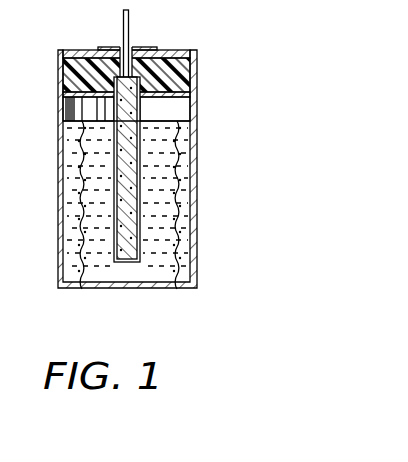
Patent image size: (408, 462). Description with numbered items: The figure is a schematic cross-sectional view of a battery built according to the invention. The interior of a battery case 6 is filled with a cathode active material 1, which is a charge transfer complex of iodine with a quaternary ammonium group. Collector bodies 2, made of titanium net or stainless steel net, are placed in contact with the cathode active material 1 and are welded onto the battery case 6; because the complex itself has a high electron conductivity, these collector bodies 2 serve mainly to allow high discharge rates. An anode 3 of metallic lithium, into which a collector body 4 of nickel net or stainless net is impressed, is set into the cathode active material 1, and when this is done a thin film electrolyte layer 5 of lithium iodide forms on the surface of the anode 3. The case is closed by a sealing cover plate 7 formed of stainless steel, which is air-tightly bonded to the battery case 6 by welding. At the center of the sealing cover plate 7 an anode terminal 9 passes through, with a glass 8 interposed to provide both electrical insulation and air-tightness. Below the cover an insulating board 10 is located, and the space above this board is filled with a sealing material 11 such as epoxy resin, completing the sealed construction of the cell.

The cathode active material 1 is at (162, 165).
The collector bodies 2 is at (177, 198).
The anode 3 is at (134, 113).
The collector body 4 is at (116, 214).
The thin film electrolyte layer 5 is at (85, 172).
The battery case 6 is at (197, 245).
The sealing cover plate 7 is at (149, 53).
The glass 8 is at (121, 47).
The anode terminal 9 is at (130, 17).
The insulating board 10 is at (93, 98).
The sealing material 11 is at (177, 77).